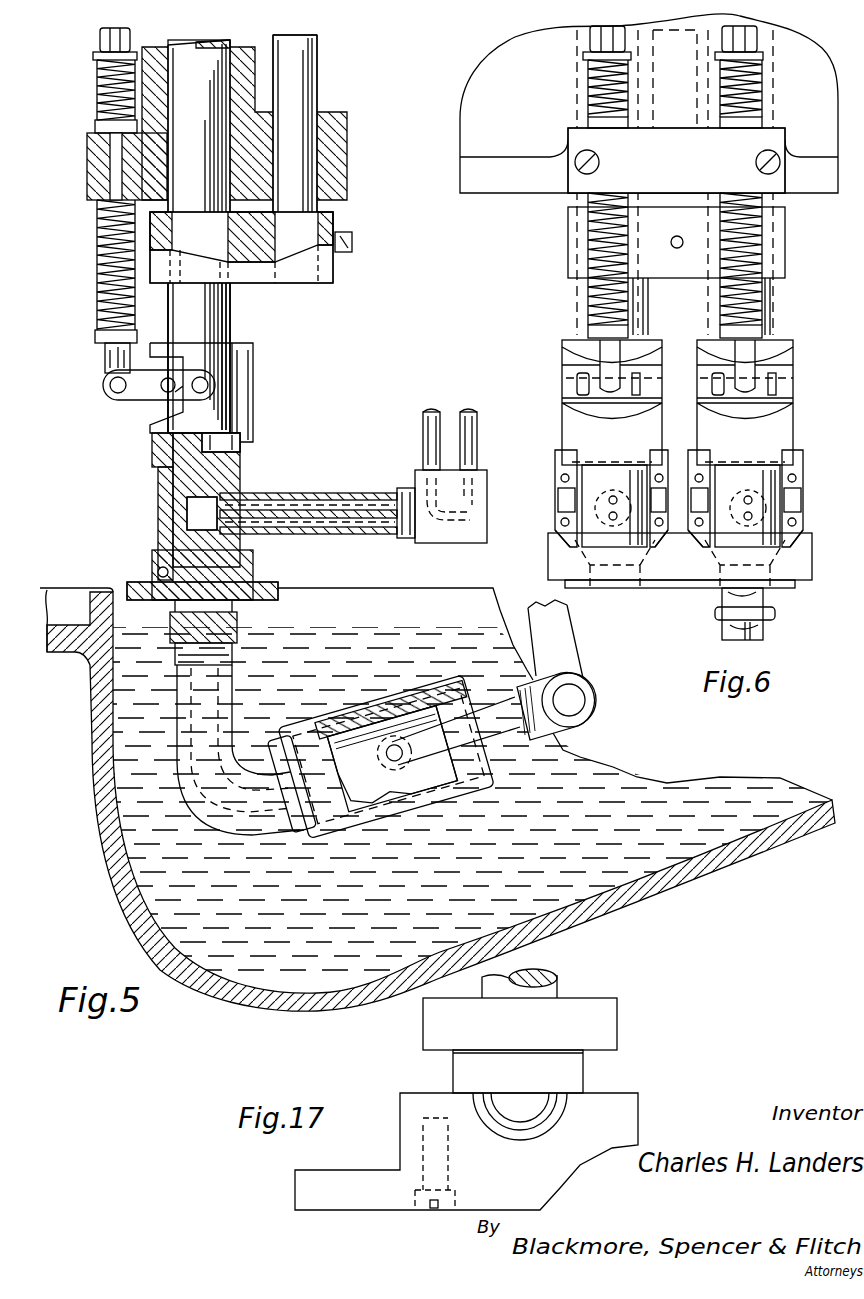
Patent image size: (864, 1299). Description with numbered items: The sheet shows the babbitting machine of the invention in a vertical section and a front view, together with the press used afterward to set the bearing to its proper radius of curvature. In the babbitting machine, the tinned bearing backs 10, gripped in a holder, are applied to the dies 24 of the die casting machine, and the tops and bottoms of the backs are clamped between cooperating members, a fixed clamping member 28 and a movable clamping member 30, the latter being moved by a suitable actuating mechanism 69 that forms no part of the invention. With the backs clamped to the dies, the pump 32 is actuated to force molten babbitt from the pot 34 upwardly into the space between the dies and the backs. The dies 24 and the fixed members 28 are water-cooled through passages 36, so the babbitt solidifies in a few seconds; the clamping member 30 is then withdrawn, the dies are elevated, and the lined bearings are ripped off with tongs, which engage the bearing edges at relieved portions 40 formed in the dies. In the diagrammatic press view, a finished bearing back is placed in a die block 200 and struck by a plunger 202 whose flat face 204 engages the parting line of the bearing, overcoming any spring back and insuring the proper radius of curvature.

In FIG. 5, the actuating mechanism 69 is at (97, 265).
In FIG. 6, the actuating mechanism 69 is at (566, 232).
In FIG. 5, the clamping member 30 is at (153, 452).
In FIG. 6, the clamping member 30 is at (578, 430).
In FIG. 5, the dies 24 is at (215, 480).
In FIG. 6, the dies 24 is at (603, 488).
In FIG. 5, the passages 36 is at (278, 502).
In FIG. 6, the passages 36 is at (575, 510).
In FIG. 6, the relieved portions 40 is at (560, 517).
In FIG. 5, the fixed clamping member 28 is at (155, 555).
In FIG. 6, the fixed clamping member 28 is at (670, 565).
In FIG. 5, the pump 32 is at (398, 700).
In FIG. 5, the pot 34 is at (684, 873).
In FIG. 17, the plunger 202 is at (588, 1010).
In FIG. 17, the flat face 204 is at (500, 1093).
In FIG. 17, the die block 200 is at (423, 1107).
In FIG. 17, the bearing backs 10 is at (560, 1112).